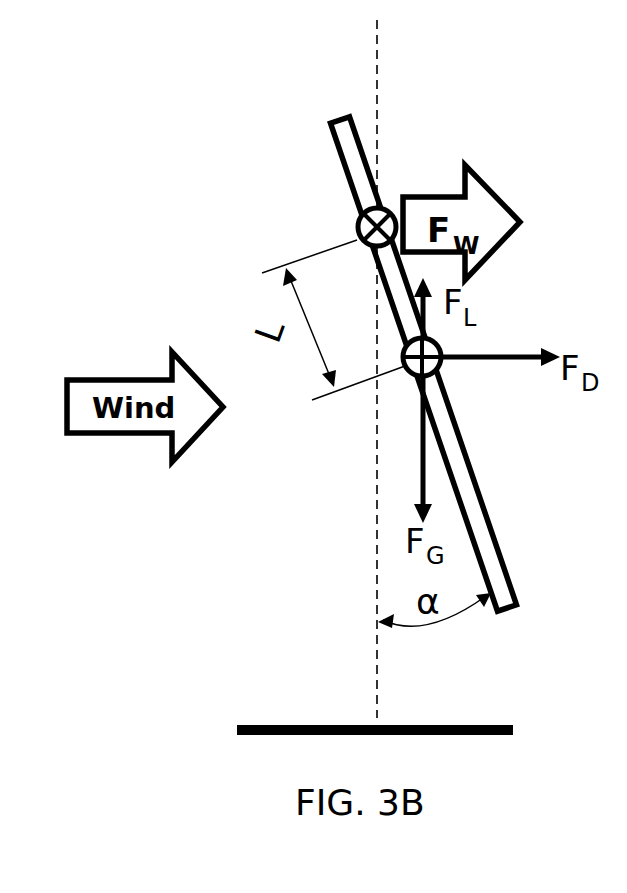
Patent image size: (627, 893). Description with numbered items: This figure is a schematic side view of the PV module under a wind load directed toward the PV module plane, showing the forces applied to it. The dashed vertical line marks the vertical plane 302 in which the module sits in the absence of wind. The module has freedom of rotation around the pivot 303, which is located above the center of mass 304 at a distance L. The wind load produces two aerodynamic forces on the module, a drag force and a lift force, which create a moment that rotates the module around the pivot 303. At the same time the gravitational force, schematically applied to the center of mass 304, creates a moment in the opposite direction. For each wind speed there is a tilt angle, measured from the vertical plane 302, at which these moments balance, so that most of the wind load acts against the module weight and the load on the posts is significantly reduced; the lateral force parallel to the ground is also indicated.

The vertical plane 302 is at (372, 42).
The pivot 303 is at (357, 228).
The center of mass 304 is at (413, 380).